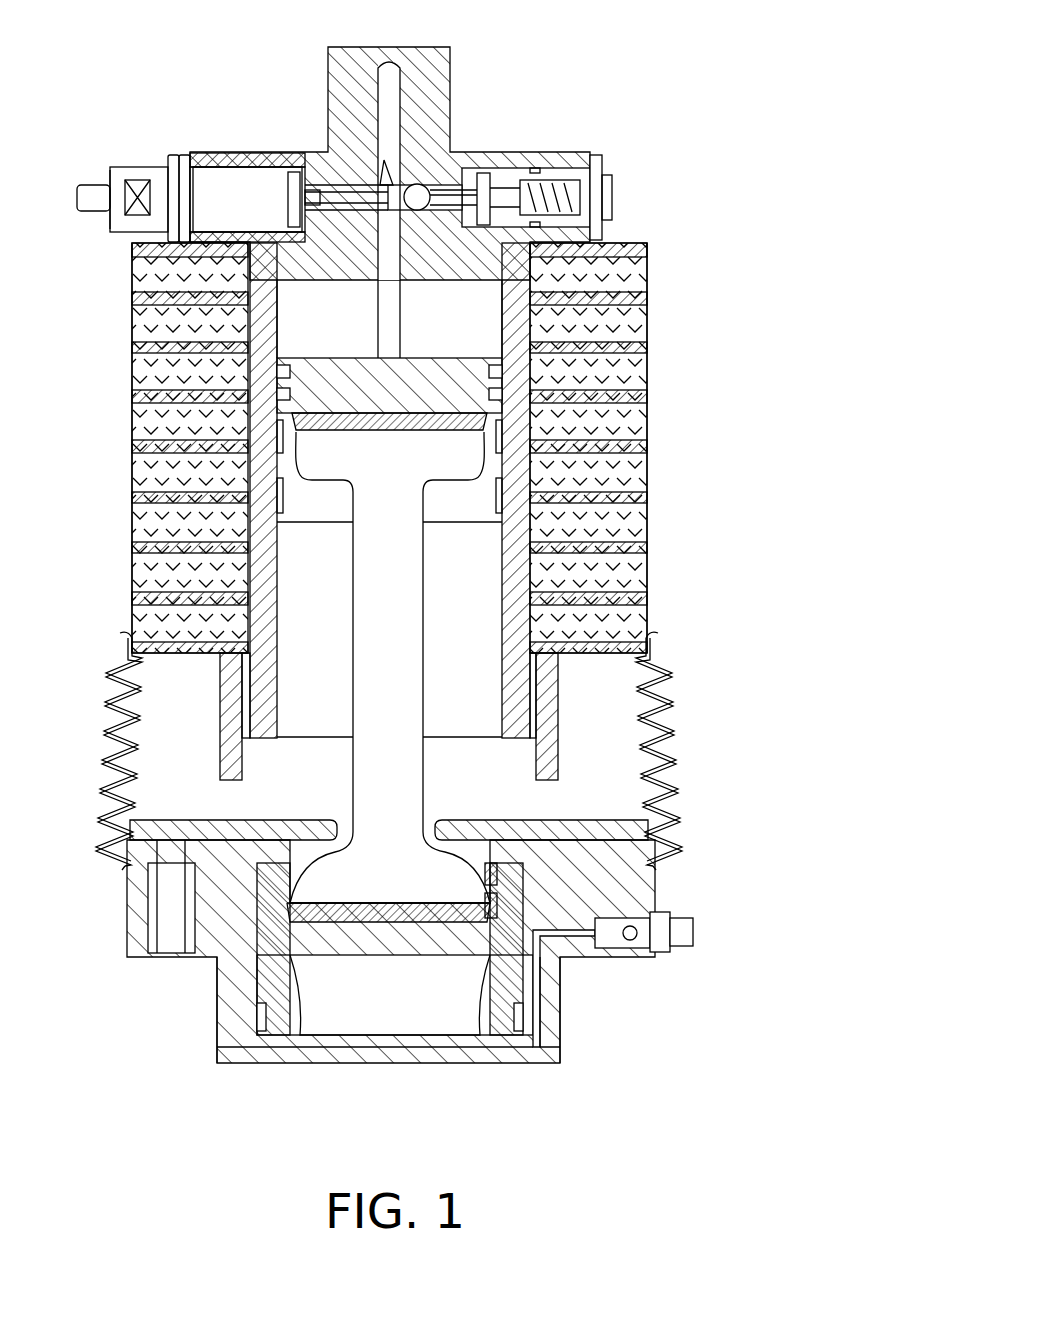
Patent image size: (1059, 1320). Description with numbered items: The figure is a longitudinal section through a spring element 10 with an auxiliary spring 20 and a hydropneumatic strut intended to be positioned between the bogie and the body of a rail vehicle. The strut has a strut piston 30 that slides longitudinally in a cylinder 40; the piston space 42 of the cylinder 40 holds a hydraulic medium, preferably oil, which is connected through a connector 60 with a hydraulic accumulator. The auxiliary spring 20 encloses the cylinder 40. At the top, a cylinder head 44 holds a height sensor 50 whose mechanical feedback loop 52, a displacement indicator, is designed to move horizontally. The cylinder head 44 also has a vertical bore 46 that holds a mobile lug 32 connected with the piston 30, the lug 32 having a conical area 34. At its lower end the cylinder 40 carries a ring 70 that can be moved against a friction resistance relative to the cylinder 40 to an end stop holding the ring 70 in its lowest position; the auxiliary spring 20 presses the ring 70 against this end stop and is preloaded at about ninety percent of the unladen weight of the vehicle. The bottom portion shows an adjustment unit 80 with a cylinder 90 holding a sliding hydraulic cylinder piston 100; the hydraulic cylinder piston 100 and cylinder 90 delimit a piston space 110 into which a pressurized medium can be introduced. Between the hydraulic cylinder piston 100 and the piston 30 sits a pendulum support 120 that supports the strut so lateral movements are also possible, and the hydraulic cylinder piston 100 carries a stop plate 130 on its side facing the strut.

The spring element 10 is at (692, 486).
The auxiliary spring 20 is at (617, 420).
The strut piston 30 is at (487, 393).
The mobile lug 32 is at (397, 306).
The conical area 34 is at (397, 167).
The cylinder 40 is at (541, 635).
The piston space 42 is at (443, 335).
The cylinder head 44 is at (430, 110).
The vertical bore 46 is at (392, 84).
The height sensor 50 is at (205, 183).
The mechanical feedback loop 52 is at (322, 188).
The connector 60 is at (630, 192).
The ring 70 is at (545, 762).
The adjustment unit 80 is at (690, 890).
The cylinder 90 is at (555, 1018).
The hydraulic cylinder piston 100 is at (272, 993).
The piston space 110 is at (325, 990).
The pendulum support 120 is at (400, 613).
The stop plate 130 is at (637, 830).